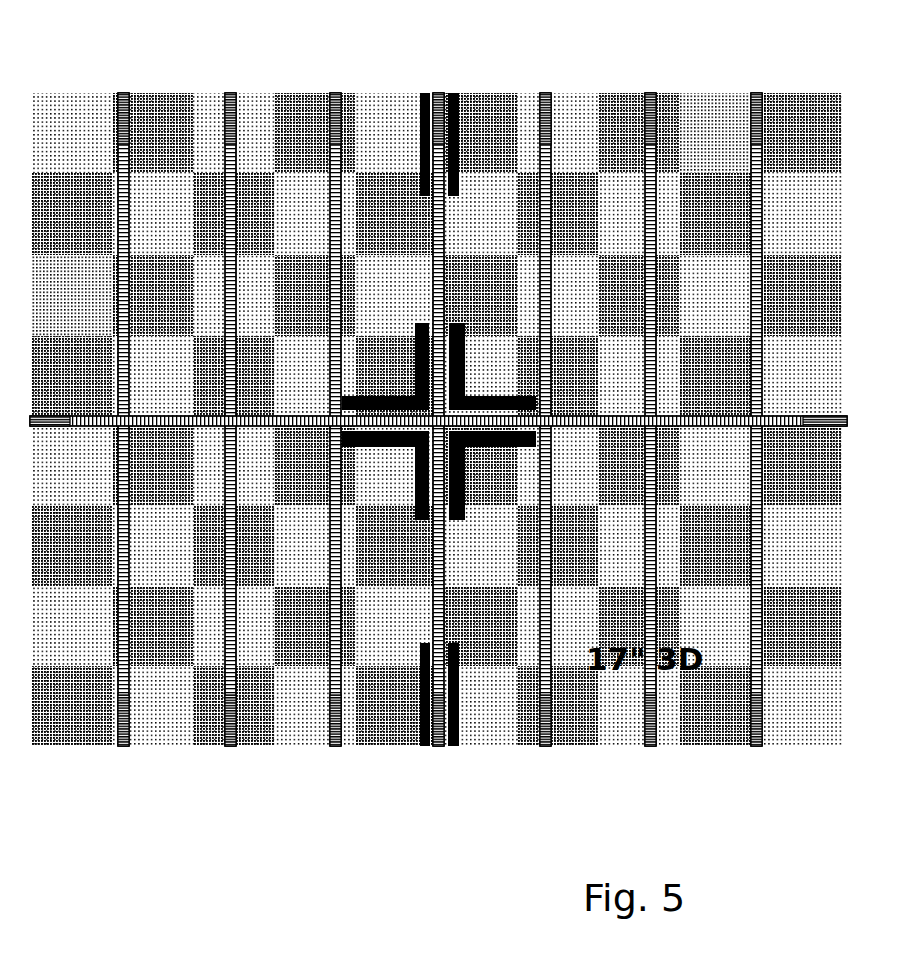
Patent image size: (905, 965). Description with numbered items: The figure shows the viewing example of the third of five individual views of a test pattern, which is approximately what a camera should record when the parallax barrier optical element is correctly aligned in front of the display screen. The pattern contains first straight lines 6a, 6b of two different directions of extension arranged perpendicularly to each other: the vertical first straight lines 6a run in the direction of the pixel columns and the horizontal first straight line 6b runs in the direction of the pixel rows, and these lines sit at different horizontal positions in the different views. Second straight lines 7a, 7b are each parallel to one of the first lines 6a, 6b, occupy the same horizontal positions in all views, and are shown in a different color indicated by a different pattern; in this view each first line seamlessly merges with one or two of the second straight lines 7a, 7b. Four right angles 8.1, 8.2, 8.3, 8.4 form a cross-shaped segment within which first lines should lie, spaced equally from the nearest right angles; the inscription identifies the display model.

The first straight lines 6a is at (543, 487).
The first straight line 6b is at (758, 414).
The second straight lines 7a is at (539, 100).
The second straight lines 7b is at (42, 420).
The right angle 8.1 is at (455, 338).
The right angle 8.2 is at (458, 469).
The right angle 8.3 is at (405, 468).
The right angle 8.4 is at (403, 348).